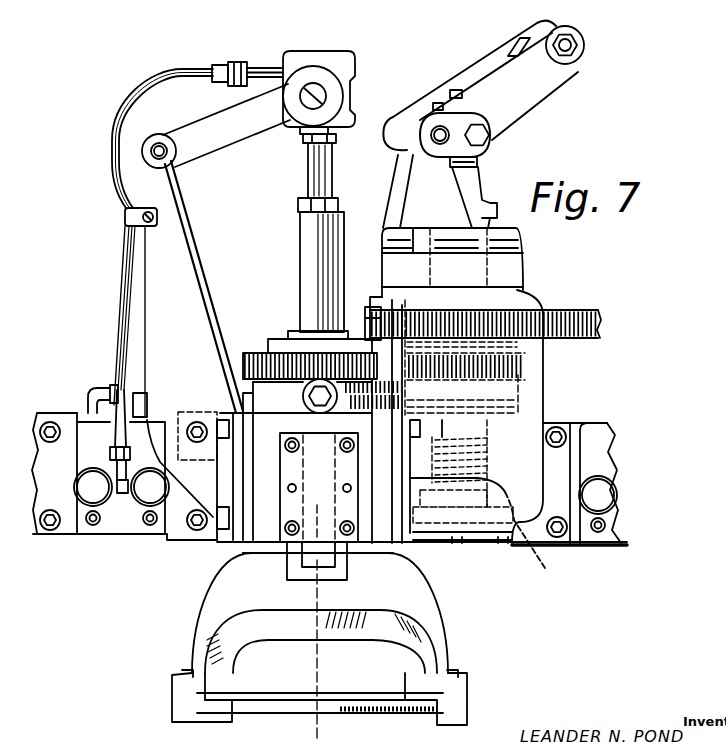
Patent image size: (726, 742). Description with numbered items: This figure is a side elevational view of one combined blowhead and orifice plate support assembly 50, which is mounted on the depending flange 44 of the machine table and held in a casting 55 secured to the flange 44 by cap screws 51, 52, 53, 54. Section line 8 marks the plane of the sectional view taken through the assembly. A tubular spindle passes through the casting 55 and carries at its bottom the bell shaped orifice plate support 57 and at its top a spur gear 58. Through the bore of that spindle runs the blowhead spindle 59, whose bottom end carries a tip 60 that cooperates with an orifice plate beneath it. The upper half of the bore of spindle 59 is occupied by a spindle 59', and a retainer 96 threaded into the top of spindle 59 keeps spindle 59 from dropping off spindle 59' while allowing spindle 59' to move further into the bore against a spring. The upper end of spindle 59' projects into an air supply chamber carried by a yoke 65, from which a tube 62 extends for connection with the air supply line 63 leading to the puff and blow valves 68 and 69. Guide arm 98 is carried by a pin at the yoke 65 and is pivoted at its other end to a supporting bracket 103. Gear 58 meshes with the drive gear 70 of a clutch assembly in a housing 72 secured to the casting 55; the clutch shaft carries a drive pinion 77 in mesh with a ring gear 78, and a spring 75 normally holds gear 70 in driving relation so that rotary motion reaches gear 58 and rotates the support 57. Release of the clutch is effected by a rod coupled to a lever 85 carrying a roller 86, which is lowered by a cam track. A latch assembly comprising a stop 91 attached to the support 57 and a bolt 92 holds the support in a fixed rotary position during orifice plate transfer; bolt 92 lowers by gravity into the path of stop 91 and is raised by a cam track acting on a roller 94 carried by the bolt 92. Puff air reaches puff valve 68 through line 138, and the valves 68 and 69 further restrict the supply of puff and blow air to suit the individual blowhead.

The air supply line 63 is at (166, 77).
The tube 62 is at (253, 66).
The section line 8 is at (357, 33).
The yoke 65 is at (355, 67).
The guide arm 98 is at (218, 137).
The spindle 59' is at (298, 163).
The supporting bracket 103 is at (172, 270).
The blowhead spindle 59 is at (317, 248).
The retainer 96 is at (298, 203).
The spur gear 58 is at (247, 354).
The roller 86 is at (548, 27).
The lever 85 is at (520, 97).
The drive pinion 77 is at (487, 308).
The ring gear 78 is at (570, 312).
The drive gear 70 is at (525, 362).
The housing 72 is at (543, 382).
The cap screw 52 is at (556, 427).
The cap screw 51 is at (560, 517).
The casting 55 is at (558, 548).
The flange 44 is at (612, 546).
The spring 75 is at (530, 537).
The orifice plate support 57 is at (417, 596).
The tip 60 is at (282, 627).
The stop 91 is at (346, 571).
The line 138 is at (100, 396).
The cap screw 53 is at (198, 424).
The puff valve 68 is at (93, 502).
The blow valve 69 is at (140, 502).
The cap screw 54 is at (190, 528).
The combined blowhead and orifice plate support assembly 50 is at (238, 536).
The roller 94 is at (305, 403).
The slide or bolt 92 is at (335, 430).